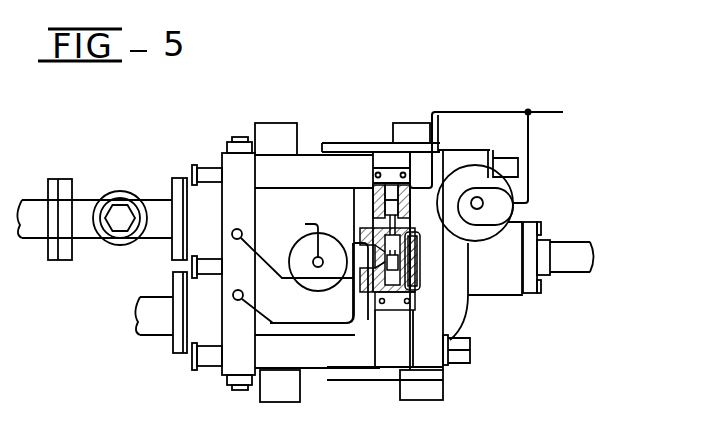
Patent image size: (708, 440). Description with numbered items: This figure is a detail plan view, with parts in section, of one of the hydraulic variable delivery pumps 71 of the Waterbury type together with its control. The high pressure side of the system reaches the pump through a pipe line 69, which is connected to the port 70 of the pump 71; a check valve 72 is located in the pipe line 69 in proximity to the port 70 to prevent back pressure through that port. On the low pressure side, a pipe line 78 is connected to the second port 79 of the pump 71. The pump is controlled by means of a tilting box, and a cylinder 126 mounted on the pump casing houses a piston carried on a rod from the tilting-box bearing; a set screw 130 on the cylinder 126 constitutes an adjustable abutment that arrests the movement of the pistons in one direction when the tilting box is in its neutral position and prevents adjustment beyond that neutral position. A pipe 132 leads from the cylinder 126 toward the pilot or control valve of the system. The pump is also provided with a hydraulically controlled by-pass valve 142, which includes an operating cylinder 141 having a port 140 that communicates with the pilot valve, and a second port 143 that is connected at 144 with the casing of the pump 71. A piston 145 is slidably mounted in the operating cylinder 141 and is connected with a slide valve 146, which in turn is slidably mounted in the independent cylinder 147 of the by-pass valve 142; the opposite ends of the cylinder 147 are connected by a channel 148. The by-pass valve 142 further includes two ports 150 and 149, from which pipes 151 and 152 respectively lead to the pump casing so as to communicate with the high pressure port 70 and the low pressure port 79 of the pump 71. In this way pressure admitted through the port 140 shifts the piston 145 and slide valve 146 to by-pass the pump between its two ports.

The pipe line 69 is at (33, 232).
The port 70 is at (195, 192).
The hydraulic variable delivery pump 71 is at (332, 262).
The check valve 72 is at (118, 237).
The pipe line 78 is at (152, 322).
The second port 79 is at (200, 330).
The cylinder 126 is at (485, 235).
The set screw 130 is at (475, 203).
The pipe 132 is at (480, 112).
The port 140 is at (412, 200).
The operating cylinder 141 is at (380, 188).
The by-pass valve 142 is at (418, 290).
The second port 143 is at (390, 213).
The connection 144 is at (305, 224).
The piston 145 is at (392, 197).
The slide valve 146 is at (393, 302).
The independent cylinder 147 is at (417, 248).
The channel 148 is at (417, 270).
The port 149 is at (370, 247).
The port 150 is at (365, 302).
The pipe 151 is at (261, 259).
The pipe 152 is at (282, 323).